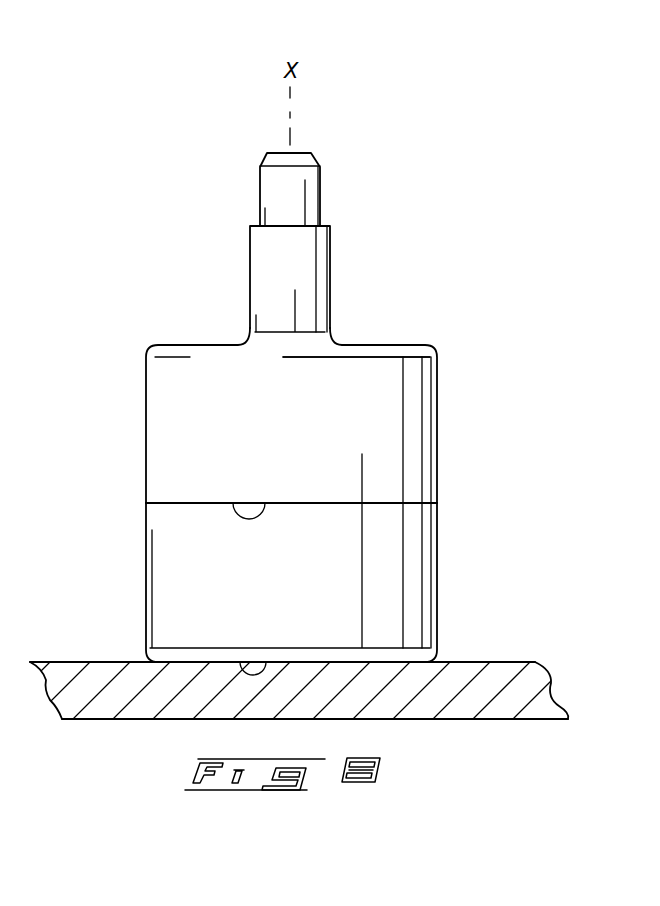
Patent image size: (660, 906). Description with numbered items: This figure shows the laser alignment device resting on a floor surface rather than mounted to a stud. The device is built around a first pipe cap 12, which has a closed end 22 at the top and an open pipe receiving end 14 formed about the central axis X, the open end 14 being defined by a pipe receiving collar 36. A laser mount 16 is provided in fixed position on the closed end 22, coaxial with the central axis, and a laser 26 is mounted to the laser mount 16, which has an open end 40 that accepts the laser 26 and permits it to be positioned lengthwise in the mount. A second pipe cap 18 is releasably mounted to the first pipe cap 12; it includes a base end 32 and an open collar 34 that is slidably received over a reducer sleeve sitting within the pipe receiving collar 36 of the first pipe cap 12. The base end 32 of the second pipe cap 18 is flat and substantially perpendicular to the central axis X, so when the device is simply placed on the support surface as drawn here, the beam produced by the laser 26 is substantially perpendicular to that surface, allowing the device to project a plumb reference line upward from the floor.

The first pipe cap 12 is at (147, 405).
The open pipe receiving end 14 is at (264, 503).
The laser mount 16 is at (272, 277).
The second pipe cap 18 is at (147, 562).
The closed end 22 is at (390, 345).
The laser 26 is at (280, 190).
The base end 32 is at (242, 675).
The open collar 34 is at (412, 565).
The pipe receiving collar 36 is at (412, 442).
The open end 40 is at (328, 226).